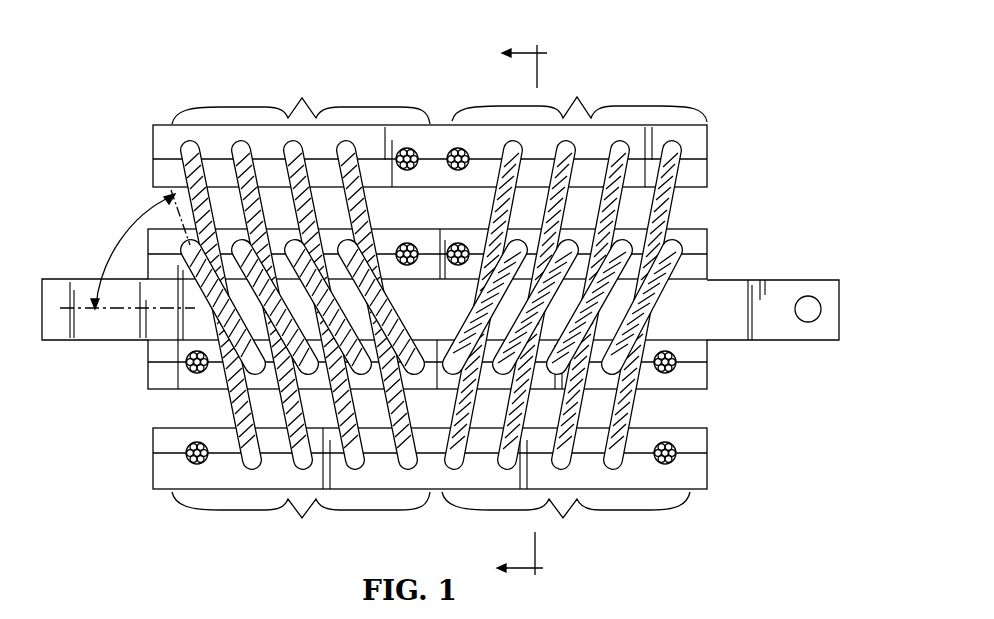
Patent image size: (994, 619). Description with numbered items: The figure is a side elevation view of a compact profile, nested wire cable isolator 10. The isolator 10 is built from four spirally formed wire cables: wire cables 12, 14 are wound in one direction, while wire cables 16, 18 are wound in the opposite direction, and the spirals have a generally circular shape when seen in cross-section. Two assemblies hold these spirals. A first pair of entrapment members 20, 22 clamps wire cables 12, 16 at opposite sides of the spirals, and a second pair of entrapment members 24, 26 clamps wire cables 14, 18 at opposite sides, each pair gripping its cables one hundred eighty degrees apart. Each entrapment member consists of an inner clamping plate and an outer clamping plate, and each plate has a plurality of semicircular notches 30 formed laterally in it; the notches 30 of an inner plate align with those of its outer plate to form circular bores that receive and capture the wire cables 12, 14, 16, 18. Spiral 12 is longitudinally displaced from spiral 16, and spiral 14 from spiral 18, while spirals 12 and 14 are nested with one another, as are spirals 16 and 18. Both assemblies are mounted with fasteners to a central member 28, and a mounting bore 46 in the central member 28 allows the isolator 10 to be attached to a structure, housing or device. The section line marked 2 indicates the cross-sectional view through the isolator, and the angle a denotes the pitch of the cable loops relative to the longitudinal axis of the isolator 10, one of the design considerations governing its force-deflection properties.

The wire cable isolator 10 is at (250, 55).
The wire cable 12 is at (301, 265).
The wire cable 14 is at (301, 403).
The wire cable 16 is at (578, 267).
The wire cable 18 is at (566, 402).
The entrapment member 20 is at (707, 152).
The entrapment member 22 is at (707, 373).
The entrapment member 24 is at (707, 248).
The entrapment member 26 is at (703, 463).
The central member 28 is at (768, 282).
The semicircular notches 30 is at (434, 148).
The mounting bore 46 is at (817, 311).
The section line 2- 2 is at (513, 311).
The angle α a is at (125, 240).